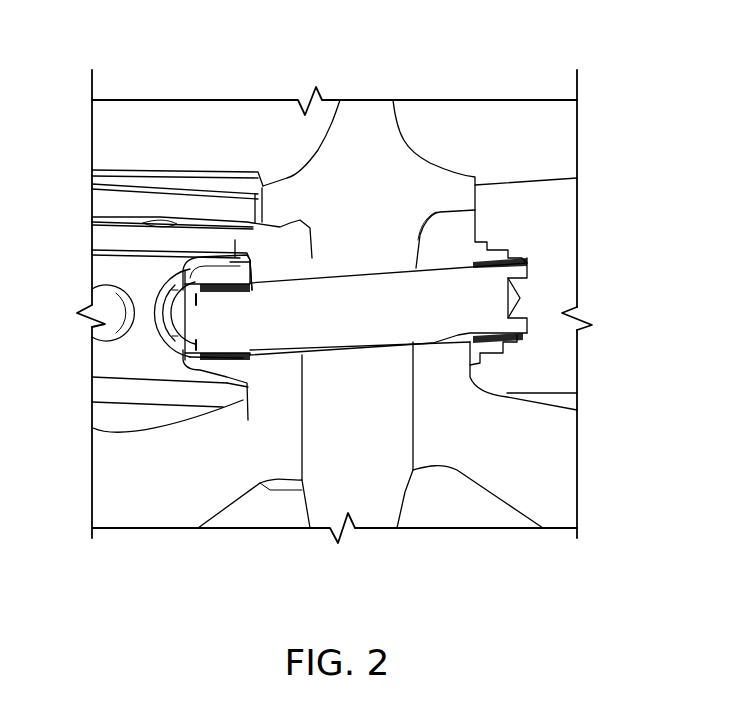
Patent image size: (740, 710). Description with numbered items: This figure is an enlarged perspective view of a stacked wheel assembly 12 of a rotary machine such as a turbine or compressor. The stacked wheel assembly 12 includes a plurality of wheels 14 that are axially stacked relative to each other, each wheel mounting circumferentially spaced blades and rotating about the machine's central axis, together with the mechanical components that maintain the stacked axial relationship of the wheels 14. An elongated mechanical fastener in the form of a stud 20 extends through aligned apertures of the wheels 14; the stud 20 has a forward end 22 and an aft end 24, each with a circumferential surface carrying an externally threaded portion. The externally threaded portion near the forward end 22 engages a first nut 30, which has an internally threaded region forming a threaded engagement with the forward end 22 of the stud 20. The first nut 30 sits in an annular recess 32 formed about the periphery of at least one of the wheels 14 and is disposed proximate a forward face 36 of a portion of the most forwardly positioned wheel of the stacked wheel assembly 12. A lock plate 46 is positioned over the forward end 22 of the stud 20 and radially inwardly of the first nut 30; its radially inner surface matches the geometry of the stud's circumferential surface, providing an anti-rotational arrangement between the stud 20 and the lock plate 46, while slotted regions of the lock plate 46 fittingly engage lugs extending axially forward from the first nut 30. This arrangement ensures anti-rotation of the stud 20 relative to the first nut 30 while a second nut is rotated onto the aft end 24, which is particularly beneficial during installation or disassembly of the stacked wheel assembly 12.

The stacked wheel assembly 12 is at (185, 73).
The wheels 14 is at (530, 488).
The stud 20 is at (383, 320).
The forward end 22 is at (196, 332).
The aft end 24 is at (538, 288).
The first nut 30 is at (195, 260).
The annular recess 32 is at (248, 253).
The forward face 36 is at (246, 370).
The lock plate 46 is at (163, 290).